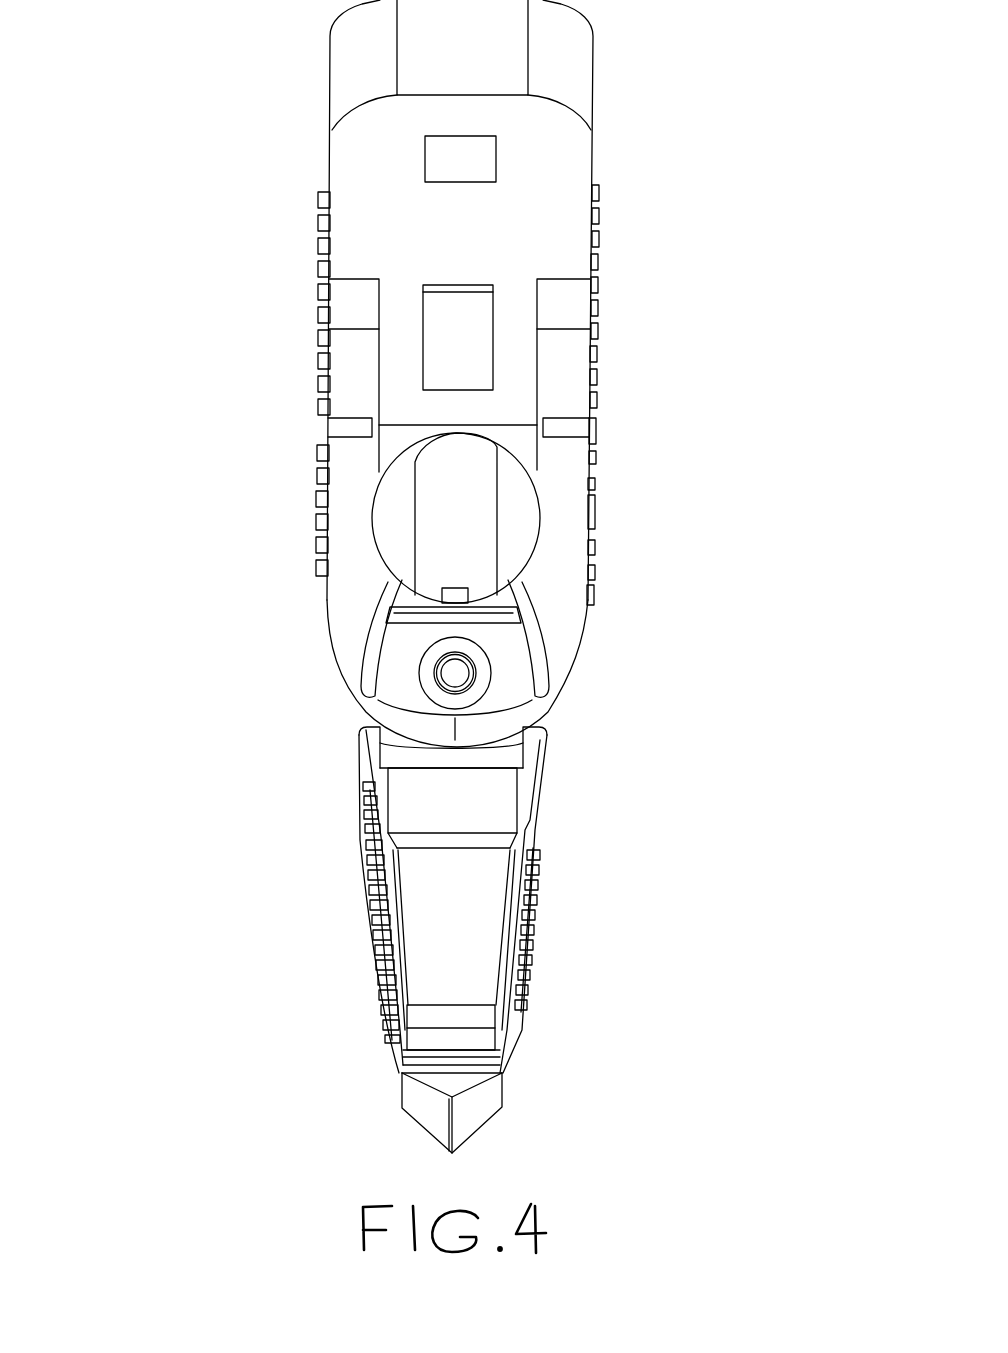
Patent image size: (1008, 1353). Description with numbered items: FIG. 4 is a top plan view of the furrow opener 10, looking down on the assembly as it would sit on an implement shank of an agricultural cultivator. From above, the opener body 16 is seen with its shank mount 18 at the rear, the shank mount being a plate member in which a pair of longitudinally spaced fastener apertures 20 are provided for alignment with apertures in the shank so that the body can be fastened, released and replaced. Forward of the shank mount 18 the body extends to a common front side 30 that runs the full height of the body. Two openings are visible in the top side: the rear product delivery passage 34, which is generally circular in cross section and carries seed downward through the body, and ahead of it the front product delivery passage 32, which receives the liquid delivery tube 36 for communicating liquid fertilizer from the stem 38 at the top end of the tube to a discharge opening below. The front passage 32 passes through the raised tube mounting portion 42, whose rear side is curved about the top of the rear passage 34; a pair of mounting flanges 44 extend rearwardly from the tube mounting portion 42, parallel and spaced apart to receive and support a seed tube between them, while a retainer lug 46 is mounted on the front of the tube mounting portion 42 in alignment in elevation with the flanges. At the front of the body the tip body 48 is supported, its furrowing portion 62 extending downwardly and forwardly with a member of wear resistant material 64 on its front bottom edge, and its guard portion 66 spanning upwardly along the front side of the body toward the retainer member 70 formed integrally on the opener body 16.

The furrow opener 10 is at (84, 397).
The opener body 16 is at (262, 490).
The shank mount 18 is at (564, 160).
The fastener apertures 20 is at (425, 157).
The front side 30 is at (483, 740).
The front product delivery passage 32 is at (489, 662).
The rear product delivery passage 34 is at (500, 517).
The liquid delivery tube 36 is at (477, 685).
The stem 38 is at (420, 665).
The tube mounting portion 42 is at (392, 708).
The mounting flanges 44 is at (353, 433).
The retainer lug 46 is at (525, 732).
The tip body 48 is at (252, 943).
The furrowing portion 62 is at (378, 1041).
The member of wear resistant material 64 is at (463, 1038).
The guard portion 66 is at (468, 903).
The retainer member 70 is at (423, 793).